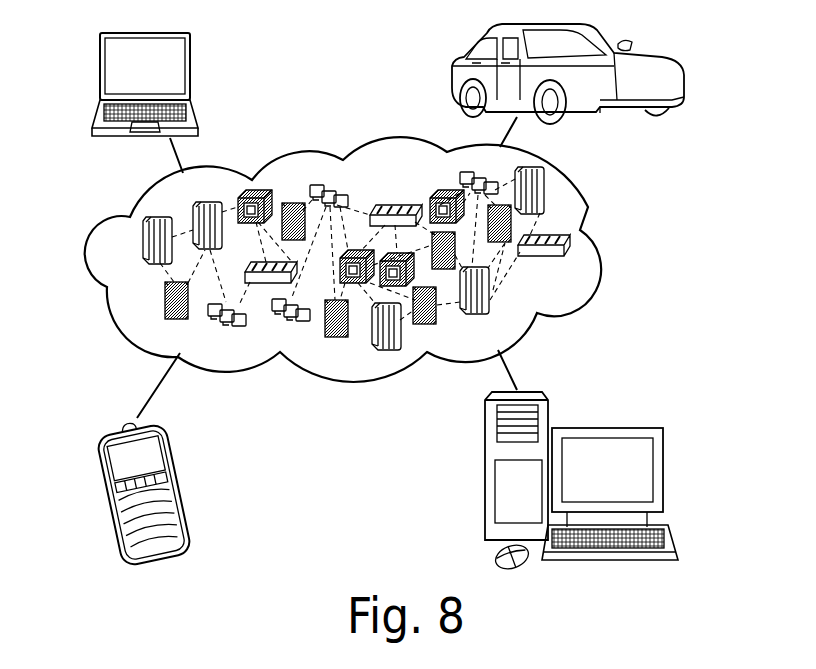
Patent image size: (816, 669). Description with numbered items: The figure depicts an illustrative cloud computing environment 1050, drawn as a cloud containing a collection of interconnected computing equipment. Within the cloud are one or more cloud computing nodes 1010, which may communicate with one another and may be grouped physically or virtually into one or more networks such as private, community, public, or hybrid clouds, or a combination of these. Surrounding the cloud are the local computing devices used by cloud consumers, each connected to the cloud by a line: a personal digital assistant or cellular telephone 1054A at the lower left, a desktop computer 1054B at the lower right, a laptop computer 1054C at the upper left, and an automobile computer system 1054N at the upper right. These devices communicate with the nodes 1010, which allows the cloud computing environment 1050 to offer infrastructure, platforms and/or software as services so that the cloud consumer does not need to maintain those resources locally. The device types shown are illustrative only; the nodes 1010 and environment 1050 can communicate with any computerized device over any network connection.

The cloud computing environment 1050 is at (406, 259).
The cloud computing nodes 1010 is at (603, 255).
The personal digital assistant (PDA) or cellular telephone 1054A is at (185, 503).
The desktop computer 1054B is at (647, 428).
The laptop computer 1054C is at (190, 57).
The automobile computer system 1054N is at (450, 77).